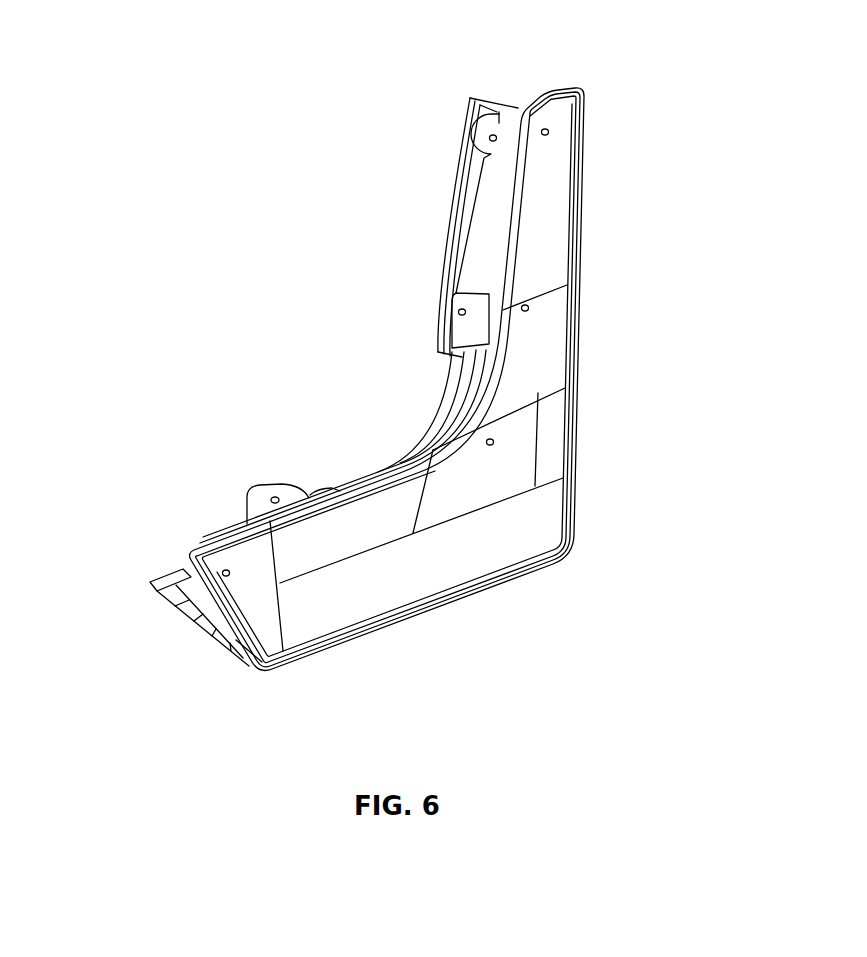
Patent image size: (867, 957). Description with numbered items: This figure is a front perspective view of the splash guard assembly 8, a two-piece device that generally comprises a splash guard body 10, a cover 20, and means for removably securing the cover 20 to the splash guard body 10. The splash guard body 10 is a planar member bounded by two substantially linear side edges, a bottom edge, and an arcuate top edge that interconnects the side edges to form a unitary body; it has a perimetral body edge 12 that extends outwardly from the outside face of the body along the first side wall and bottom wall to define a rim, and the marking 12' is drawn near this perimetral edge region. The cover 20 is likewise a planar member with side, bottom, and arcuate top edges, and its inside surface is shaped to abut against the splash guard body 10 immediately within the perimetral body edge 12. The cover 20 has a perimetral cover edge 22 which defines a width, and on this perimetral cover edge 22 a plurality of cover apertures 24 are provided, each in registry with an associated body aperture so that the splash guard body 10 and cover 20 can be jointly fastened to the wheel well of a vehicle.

The splash guard assembly 8 is at (243, 208).
The splash guard body 10 is at (188, 574).
The perimetral body edge 12 is at (184, 636).
The tab 12' is at (122, 597).
The cover 20 is at (556, 206).
The perimetral cover edge 22 is at (252, 628).
The cover aperture 24 is at (545, 132).